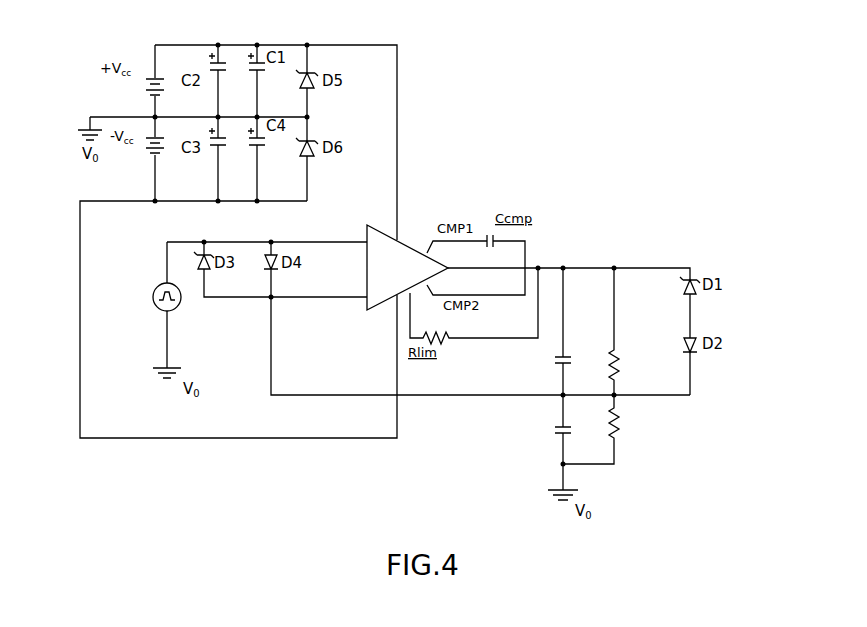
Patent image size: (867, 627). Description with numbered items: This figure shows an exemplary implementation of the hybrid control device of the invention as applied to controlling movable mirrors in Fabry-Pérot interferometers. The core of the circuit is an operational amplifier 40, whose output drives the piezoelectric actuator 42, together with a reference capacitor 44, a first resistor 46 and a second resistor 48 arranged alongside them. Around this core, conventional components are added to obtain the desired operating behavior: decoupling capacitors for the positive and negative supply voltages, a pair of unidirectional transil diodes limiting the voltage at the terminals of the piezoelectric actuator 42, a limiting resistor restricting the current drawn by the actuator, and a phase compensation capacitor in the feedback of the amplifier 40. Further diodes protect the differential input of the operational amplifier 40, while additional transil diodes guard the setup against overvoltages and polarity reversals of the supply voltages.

The operational amplifier 40 is at (419, 238).
The piezoelectric actuator 42 is at (578, 351).
The reference capacitor 44 is at (554, 448).
The first resistor 46 is at (625, 340).
The second resistor 48 is at (628, 445).